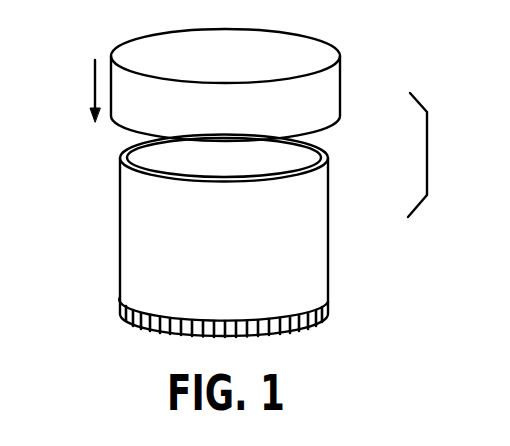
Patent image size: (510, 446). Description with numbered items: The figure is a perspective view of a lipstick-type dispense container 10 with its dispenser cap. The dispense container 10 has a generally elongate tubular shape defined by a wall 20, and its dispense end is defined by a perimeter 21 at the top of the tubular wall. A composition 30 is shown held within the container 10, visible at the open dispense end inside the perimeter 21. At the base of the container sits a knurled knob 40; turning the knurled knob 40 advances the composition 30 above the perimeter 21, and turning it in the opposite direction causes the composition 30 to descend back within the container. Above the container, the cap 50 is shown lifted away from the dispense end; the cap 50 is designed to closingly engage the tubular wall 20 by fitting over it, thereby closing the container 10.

The dispense container 10 is at (108, 185).
The wall 20 is at (298, 247).
The perimeter 21 is at (297, 177).
The composition 30 is at (287, 160).
The knurled knob 40 is at (327, 320).
The cap 50 is at (338, 43).